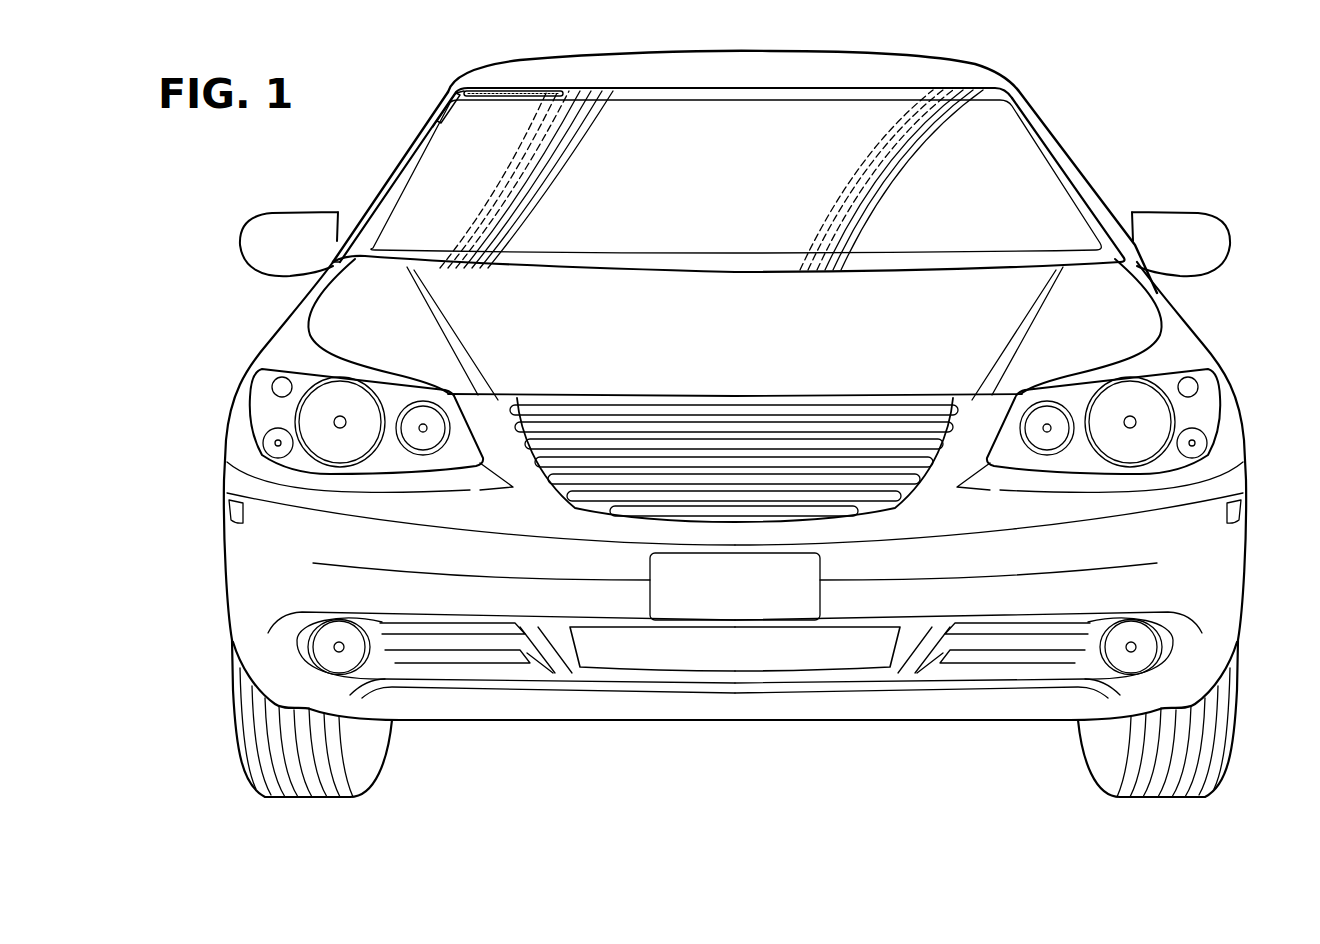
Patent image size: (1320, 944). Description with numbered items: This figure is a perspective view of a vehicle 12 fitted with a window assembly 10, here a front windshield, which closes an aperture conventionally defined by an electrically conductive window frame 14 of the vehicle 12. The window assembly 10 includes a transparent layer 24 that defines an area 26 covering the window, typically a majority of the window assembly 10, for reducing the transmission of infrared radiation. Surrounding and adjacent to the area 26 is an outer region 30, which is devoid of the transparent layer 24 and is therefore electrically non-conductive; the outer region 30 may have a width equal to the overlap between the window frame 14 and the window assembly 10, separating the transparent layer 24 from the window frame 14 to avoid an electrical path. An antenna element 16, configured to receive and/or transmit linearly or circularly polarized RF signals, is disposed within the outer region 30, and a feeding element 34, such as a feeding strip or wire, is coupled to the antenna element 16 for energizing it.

The window assembly 10 is at (1066, 127).
The vehicle 12 is at (1041, 49).
The window frame 14 is at (1096, 197).
The antenna element 16 is at (443, 107).
The transparent layer 24 is at (430, 186).
The area 26 is at (677, 113).
The outer region 30 is at (457, 87).
The feeding element 34 is at (560, 92).